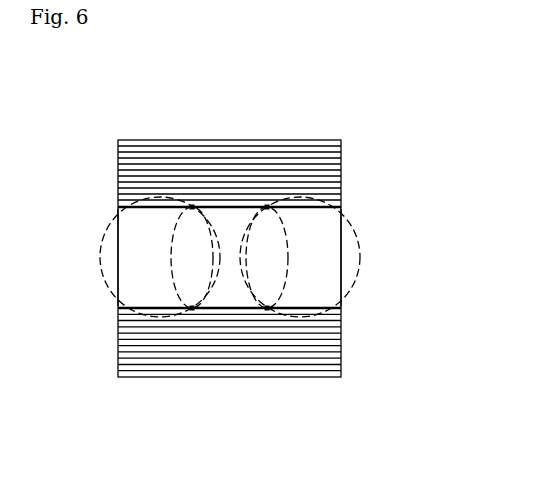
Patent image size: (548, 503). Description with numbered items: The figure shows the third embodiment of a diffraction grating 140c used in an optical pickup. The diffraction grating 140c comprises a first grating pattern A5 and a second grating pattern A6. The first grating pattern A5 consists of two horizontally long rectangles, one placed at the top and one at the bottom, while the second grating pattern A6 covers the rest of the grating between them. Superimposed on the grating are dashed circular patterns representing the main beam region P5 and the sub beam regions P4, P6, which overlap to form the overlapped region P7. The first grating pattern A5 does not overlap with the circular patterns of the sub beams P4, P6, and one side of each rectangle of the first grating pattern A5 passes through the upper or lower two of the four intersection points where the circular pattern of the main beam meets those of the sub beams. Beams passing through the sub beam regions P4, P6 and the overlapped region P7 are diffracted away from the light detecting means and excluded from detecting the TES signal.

The diffraction grating 140c is at (322, 138).
The first grating pattern A5 is at (330, 170).
The second grating pattern A6 is at (332, 257).
The sub beam region P4 is at (130, 257).
The main beam region P5 is at (230, 223).
The sub beam region P6 is at (352, 288).
The overlapped region P7 is at (262, 270).